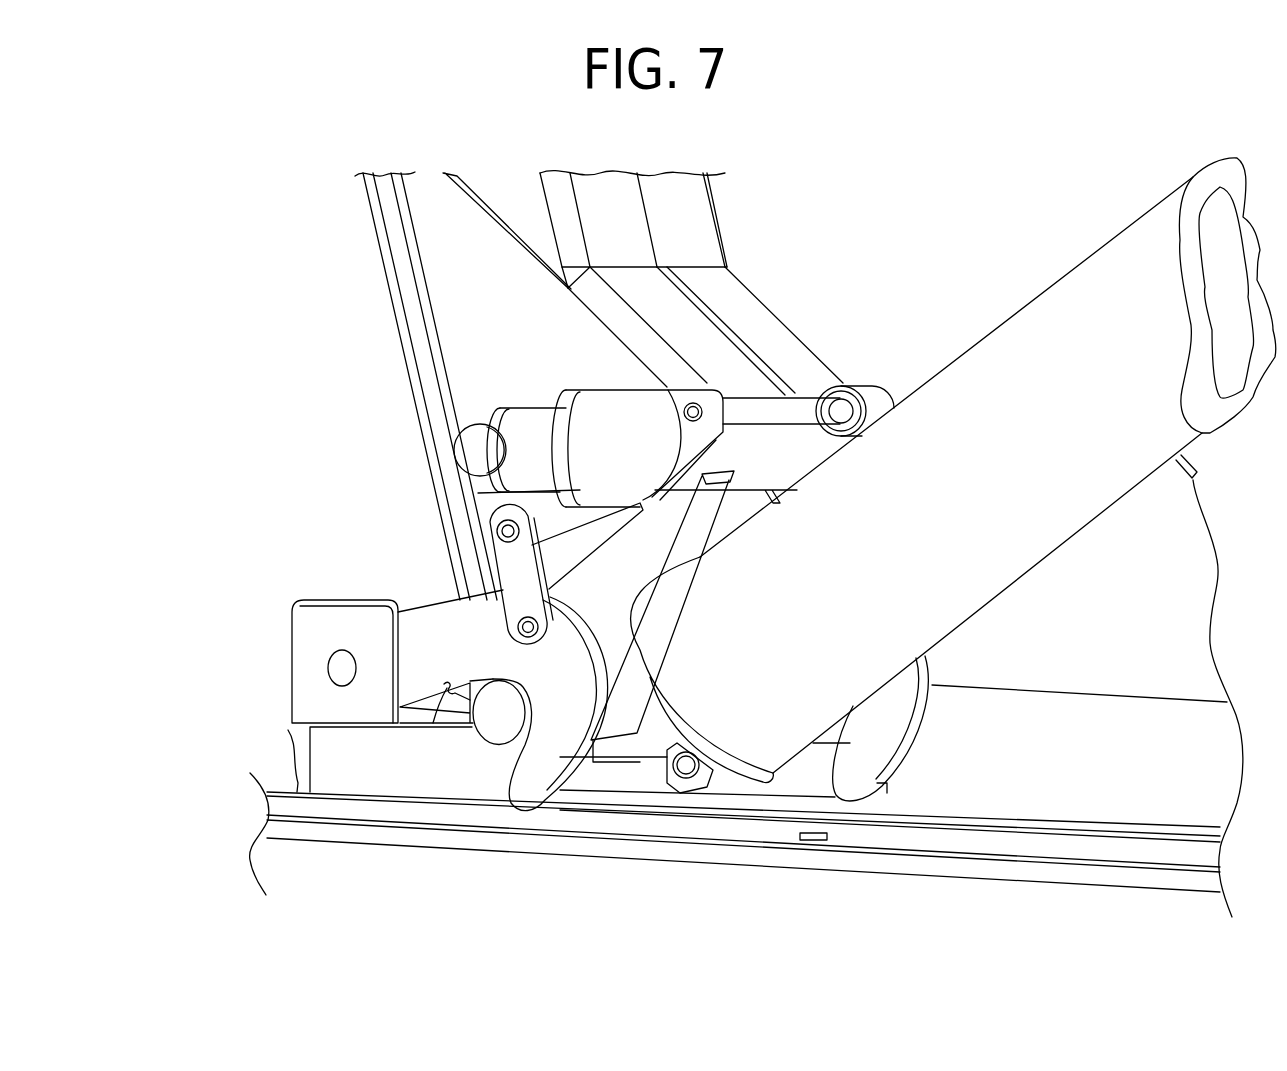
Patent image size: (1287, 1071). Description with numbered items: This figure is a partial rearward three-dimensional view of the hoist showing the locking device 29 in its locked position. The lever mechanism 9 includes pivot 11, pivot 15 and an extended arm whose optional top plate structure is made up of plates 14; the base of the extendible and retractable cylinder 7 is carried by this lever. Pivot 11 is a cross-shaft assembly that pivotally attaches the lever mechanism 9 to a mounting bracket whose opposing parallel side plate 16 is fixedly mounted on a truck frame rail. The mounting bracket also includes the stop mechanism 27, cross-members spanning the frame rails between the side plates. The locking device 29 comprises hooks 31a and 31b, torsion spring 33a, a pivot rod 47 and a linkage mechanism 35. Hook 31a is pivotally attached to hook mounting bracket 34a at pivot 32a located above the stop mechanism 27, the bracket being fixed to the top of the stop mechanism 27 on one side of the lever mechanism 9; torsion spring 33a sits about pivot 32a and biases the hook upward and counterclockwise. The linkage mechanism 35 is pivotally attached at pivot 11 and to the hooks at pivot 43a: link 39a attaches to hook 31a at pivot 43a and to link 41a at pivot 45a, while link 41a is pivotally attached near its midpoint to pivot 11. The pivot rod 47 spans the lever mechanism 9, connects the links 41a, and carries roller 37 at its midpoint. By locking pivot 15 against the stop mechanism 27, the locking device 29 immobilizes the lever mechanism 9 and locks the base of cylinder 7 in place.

The extendible and retractable cylinder 7 is at (1040, 357).
The lever mechanism 9 is at (750, 196).
The pivot 11 is at (478, 450).
The plates 14 is at (672, 313).
The pivot 15 is at (493, 718).
The side plate 16 is at (470, 337).
The stop mechanism 27 is at (332, 763).
The locking device 29 is at (327, 249).
The hook 31a is at (523, 800).
The hook 31b is at (895, 731).
The pivot 32a is at (340, 668).
The torsion spring 33a is at (447, 690).
The hook mounting bracket 34a is at (300, 700).
The linkage mechanism 35 is at (433, 531).
The roller 37 is at (878, 396).
The link 39a is at (507, 568).
The link 41a is at (478, 493).
The pivot 43a is at (524, 628).
The pivot 45a is at (537, 563).
The pivot rod 47 is at (770, 415).